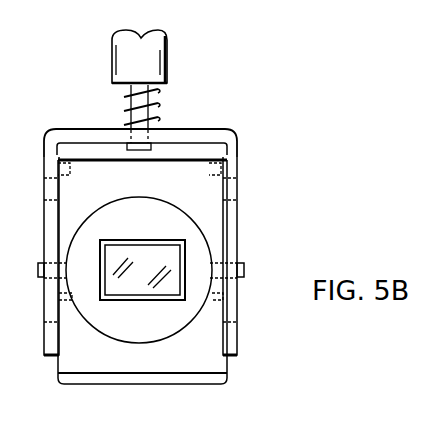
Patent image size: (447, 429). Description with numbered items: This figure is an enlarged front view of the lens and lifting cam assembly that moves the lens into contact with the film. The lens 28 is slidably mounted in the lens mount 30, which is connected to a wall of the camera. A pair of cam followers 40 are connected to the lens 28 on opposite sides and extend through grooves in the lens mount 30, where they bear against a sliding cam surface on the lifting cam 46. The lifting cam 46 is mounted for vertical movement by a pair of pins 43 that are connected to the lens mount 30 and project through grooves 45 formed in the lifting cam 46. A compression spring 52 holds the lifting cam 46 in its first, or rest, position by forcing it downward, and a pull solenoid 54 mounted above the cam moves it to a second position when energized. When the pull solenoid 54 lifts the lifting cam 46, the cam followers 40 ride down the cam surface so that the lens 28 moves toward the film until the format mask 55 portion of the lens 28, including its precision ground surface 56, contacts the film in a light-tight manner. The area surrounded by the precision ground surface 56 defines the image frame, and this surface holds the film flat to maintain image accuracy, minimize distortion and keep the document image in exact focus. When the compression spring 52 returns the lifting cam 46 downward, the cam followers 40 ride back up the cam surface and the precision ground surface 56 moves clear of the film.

The pull solenoid 54 is at (168, 52).
The compression spring 52 is at (158, 108).
The lifting cam 46 is at (44, 194).
The pins 43 is at (44, 160).
The grooves 45 is at (44, 180).
The cam followers 40 is at (38, 271).
The lens mount 30 is at (214, 224).
The lens 28 is at (203, 252).
The precision ground surface 56 is at (122, 302).
The format mask 55 is at (158, 302).